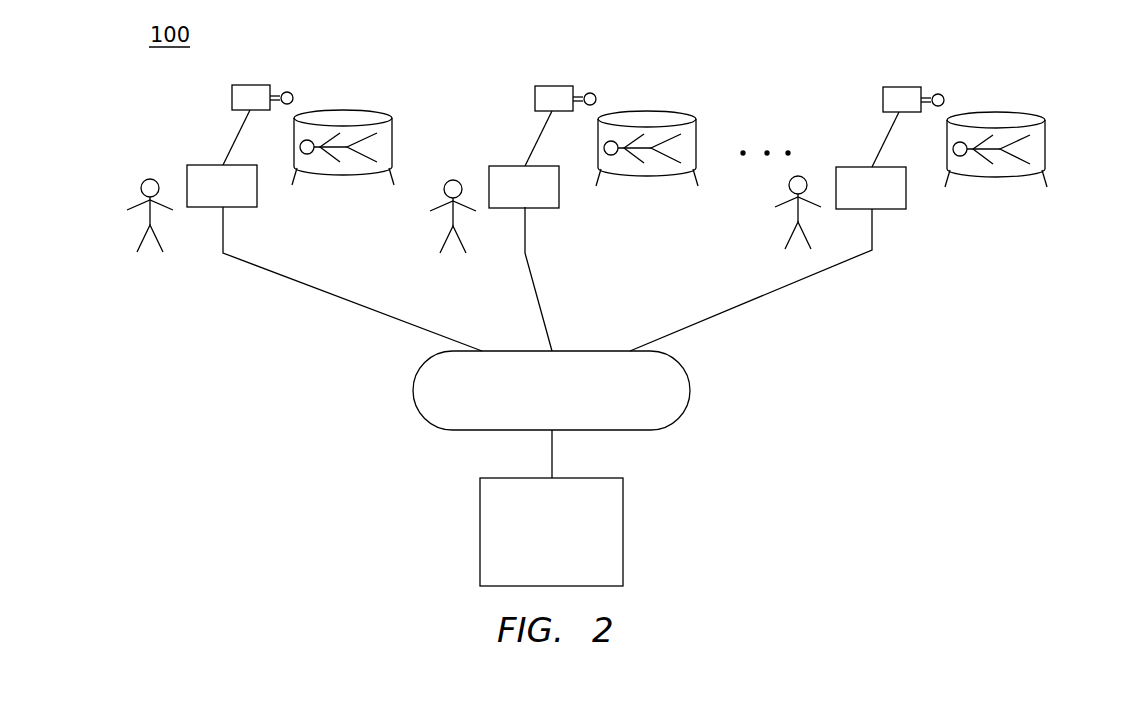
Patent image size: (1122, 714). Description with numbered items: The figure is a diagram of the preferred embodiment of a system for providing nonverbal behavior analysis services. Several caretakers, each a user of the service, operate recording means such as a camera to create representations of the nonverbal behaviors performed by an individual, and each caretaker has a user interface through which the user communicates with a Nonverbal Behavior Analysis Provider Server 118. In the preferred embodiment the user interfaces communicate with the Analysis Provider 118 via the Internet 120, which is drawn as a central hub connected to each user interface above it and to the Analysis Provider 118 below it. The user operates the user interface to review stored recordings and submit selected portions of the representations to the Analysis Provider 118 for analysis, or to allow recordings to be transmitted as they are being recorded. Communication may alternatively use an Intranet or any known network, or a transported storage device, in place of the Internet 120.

The Nonverbal Behavior Analysis Provider Server 118 is at (623, 532).
The Internet 120 is at (691, 389).